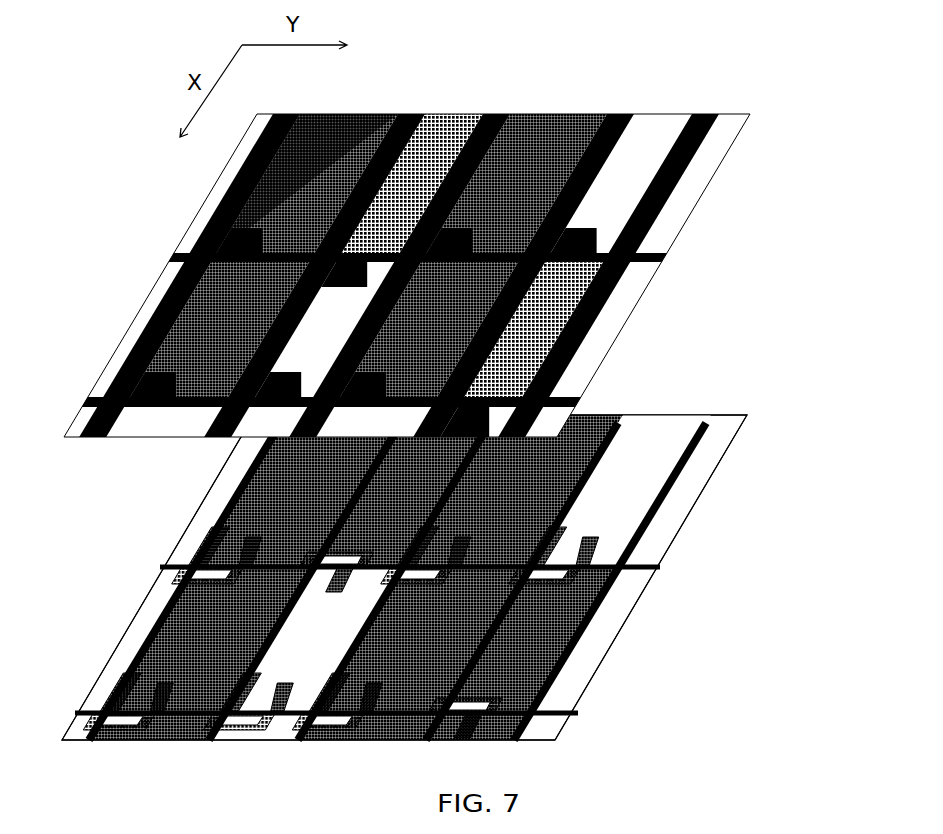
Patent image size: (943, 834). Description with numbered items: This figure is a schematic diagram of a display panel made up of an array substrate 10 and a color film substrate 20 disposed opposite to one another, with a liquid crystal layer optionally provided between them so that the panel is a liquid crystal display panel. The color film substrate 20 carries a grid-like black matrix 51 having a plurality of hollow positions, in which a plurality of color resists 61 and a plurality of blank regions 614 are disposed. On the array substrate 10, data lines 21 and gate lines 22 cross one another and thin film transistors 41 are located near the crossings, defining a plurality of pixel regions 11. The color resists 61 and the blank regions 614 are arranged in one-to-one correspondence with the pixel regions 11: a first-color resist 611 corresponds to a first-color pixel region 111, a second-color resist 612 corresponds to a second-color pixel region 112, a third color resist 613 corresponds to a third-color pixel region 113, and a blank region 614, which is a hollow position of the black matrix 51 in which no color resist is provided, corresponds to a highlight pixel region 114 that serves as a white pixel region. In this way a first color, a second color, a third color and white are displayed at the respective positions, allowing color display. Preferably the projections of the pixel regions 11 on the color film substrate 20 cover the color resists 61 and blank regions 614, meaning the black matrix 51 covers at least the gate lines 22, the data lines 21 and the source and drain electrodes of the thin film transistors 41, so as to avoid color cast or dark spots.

The array substrate 10 is at (431, 557).
The pixel region 11 is at (428, 557).
The first-color pixel region 111 is at (325, 456).
The second-color pixel region 112 is at (565, 455).
The third-color pixel region 113 is at (402, 502).
The highlight pixel region 114 is at (602, 545).
The color film substrate 20 is at (471, 250).
The data line 21 is at (597, 468).
The gate line 22 is at (548, 711).
The thin film transistor 41 is at (205, 552).
The black matrix 51 is at (228, 197).
The color resist 61 is at (378, 230).
The first-color resist 611 is at (343, 153).
The second-color resist 612 is at (547, 155).
The third color resist 613 is at (450, 153).
The blank region 614 is at (645, 155).